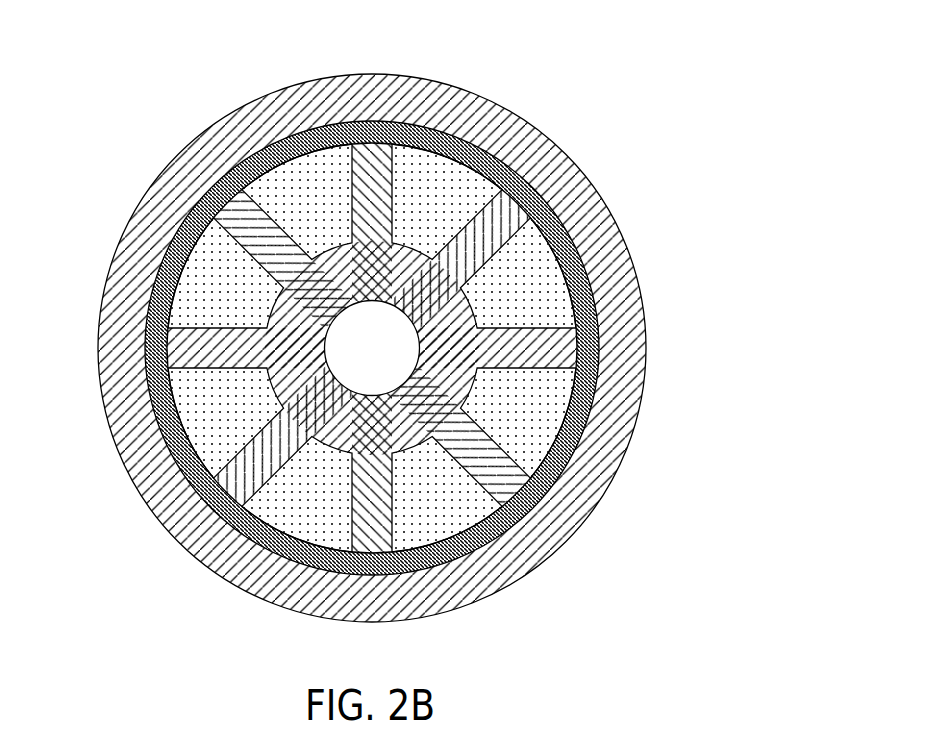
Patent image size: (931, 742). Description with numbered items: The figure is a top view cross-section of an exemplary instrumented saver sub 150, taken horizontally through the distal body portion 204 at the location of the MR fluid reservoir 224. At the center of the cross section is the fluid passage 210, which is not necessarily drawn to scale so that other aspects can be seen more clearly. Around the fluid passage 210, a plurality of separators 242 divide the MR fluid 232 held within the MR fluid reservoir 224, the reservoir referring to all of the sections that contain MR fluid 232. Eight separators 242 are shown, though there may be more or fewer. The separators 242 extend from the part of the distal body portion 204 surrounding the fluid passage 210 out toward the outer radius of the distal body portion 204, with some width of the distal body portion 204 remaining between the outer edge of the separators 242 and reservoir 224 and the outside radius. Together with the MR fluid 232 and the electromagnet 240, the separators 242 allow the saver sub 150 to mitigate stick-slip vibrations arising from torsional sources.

The instrumented saver sub 150 is at (699, 119).
The distal body portion 204 is at (640, 297).
The fluid passage 210 is at (373, 355).
The MR fluid reservoir 224 is at (583, 262).
The MR fluid 232 is at (448, 185).
The electromagnet 240 is at (587, 382).
The separators 242 is at (377, 162).